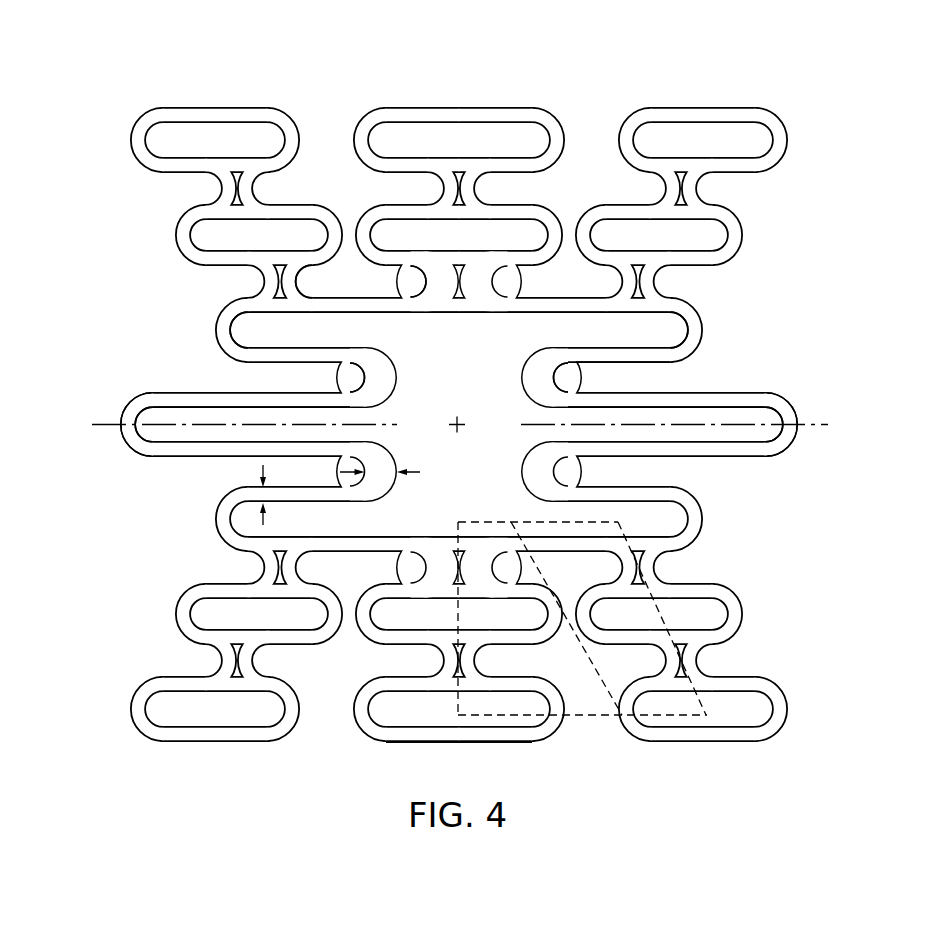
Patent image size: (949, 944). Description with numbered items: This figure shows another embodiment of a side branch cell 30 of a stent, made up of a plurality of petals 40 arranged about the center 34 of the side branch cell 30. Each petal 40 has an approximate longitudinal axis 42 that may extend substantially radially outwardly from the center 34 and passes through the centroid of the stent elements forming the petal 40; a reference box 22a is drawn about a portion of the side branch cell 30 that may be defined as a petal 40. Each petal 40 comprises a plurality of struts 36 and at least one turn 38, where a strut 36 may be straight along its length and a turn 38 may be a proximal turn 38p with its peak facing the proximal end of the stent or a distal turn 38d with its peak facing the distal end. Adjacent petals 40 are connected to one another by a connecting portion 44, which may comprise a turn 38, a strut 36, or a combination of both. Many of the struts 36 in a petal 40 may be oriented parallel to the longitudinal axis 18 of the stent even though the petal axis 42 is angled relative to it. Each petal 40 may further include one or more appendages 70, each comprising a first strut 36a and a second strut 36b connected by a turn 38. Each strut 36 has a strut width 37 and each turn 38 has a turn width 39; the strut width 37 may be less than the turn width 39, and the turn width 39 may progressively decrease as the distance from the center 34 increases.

The side branch cell 30 is at (846, 122).
The longitudinal axis of the stent 18 is at (113, 424).
The connecting portion 44 is at (805, 421).
The center of the side branch cell 34 is at (463, 431).
The strut 36 is at (238, 391).
The first strut 36a is at (696, 391).
The second strut 36b is at (584, 368).
The strut width 37 is at (259, 486).
The turn 38 is at (363, 377).
The proximal turn 38p is at (419, 283).
The distal turn 38d is at (298, 282).
The turn width 39 is at (377, 478).
The petal 40 is at (410, 313).
The appendage 70 is at (284, 313).
The longitudinal axis of the petal 42 is at (595, 663).
The reference box 22a is at (573, 719).